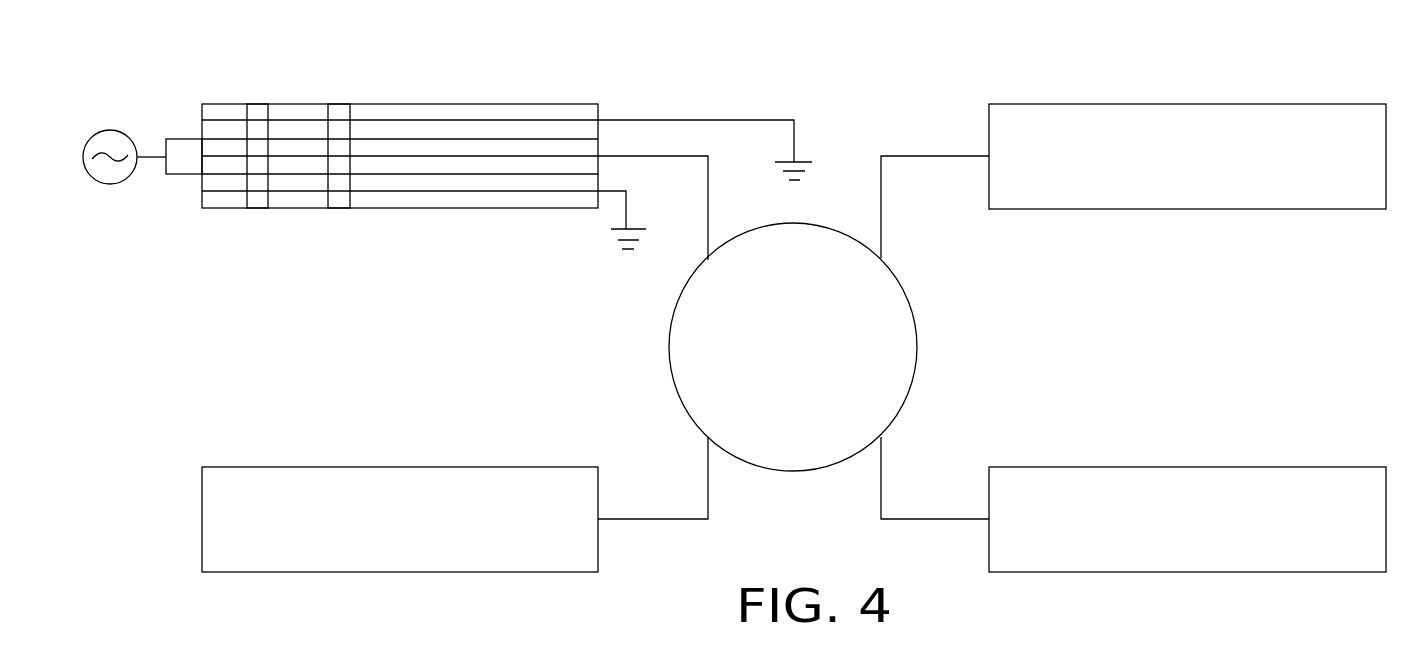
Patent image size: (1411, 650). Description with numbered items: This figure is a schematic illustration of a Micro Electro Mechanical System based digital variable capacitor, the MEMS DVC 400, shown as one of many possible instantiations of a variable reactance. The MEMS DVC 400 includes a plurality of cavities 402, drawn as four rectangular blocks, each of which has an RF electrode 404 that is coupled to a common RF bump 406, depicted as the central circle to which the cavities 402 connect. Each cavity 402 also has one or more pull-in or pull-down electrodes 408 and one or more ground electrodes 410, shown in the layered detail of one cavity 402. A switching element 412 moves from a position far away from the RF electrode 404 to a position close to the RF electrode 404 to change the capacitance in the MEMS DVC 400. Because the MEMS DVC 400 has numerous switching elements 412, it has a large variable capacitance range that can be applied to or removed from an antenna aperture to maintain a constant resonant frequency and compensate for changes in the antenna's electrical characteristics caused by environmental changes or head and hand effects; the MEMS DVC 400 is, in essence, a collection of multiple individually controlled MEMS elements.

The MEMS DVC 400 is at (918, 88).
The cavity 402 is at (540, 103).
The RF electrode 404 is at (490, 155).
The common RF bump 406 is at (916, 323).
The pull-in electrode 408 is at (437, 138).
The ground electrode 410 is at (380, 120).
The switching element 412 is at (328, 114).